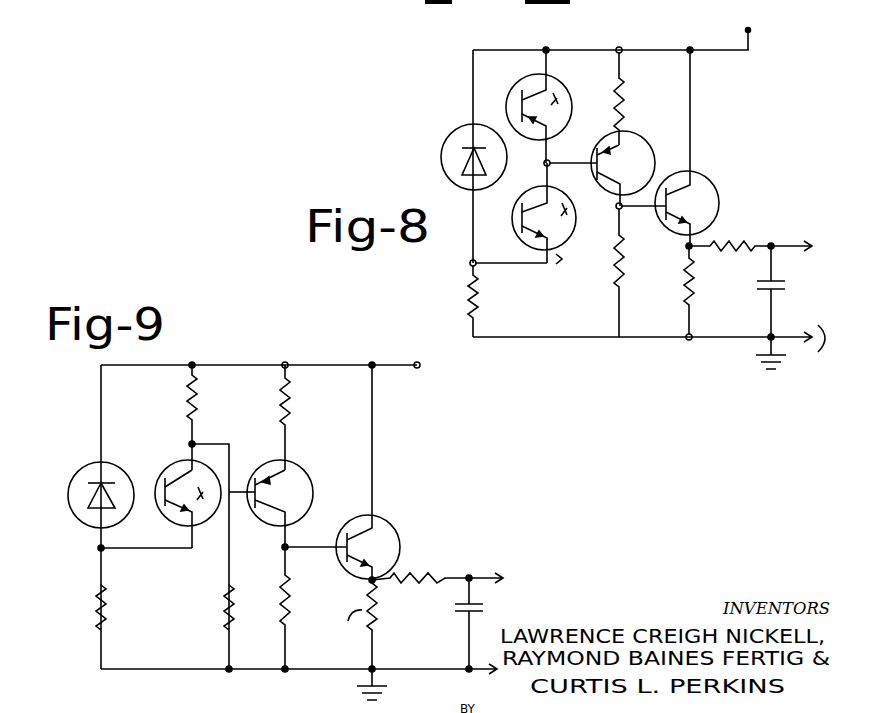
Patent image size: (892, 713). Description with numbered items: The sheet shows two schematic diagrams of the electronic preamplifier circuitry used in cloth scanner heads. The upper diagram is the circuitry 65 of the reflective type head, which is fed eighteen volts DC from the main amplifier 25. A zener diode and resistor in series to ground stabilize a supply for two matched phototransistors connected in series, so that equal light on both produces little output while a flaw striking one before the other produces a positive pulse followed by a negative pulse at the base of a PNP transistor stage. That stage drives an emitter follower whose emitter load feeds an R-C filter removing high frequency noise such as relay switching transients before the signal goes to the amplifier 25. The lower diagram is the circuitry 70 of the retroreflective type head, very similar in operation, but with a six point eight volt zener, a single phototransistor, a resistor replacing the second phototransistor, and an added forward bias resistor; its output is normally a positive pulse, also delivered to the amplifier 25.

In FIG. 8, the electrical circuitry of the reflective type head 65 is at (742, 88).
In FIG. 9, the electrical circuitry of the retroreflective type detector head 70 is at (402, 449).
In FIG. 8, the main amplifier 25 is at (785, 330).
In FIG. 9, the main amplifier 25 is at (578, 619).